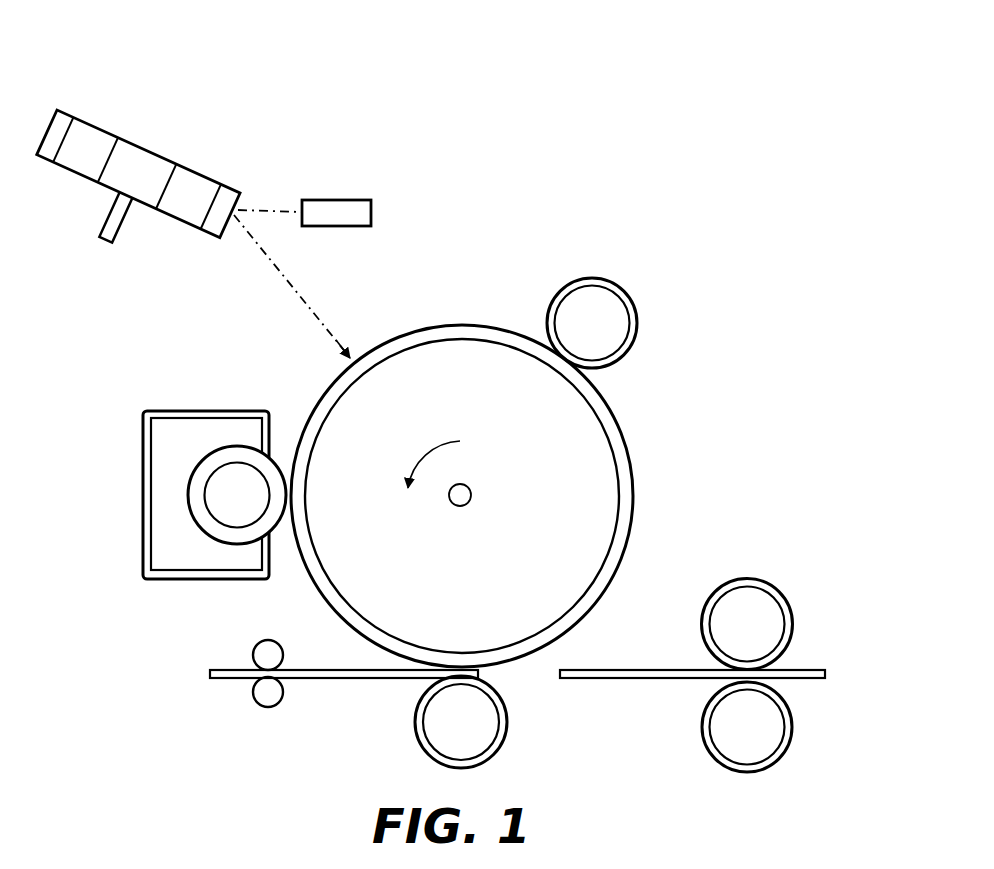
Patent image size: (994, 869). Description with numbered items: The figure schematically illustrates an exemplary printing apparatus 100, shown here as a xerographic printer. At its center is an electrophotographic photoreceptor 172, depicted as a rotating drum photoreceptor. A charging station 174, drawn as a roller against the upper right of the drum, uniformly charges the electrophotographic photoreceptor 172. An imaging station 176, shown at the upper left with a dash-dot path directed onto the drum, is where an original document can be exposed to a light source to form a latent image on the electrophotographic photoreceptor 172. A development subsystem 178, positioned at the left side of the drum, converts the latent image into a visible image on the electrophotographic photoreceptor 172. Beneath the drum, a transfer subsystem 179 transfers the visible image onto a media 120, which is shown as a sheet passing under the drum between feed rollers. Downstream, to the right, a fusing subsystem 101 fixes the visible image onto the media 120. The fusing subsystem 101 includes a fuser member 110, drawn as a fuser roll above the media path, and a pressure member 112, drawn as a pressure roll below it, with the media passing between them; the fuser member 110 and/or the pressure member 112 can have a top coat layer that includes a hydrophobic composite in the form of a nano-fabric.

The printing apparatus 100 is at (602, 58).
The fusing subsystem 101 is at (769, 541).
The fuser member 110 is at (703, 627).
The pressure member 112 is at (703, 733).
The media 120 is at (233, 668).
The electrophotographic photoreceptor 172 is at (615, 423).
The charging station 174 is at (623, 287).
The imaging station 176 is at (370, 105).
The development subsystem 178 is at (126, 413).
The transfer subsystem 179 is at (505, 738).